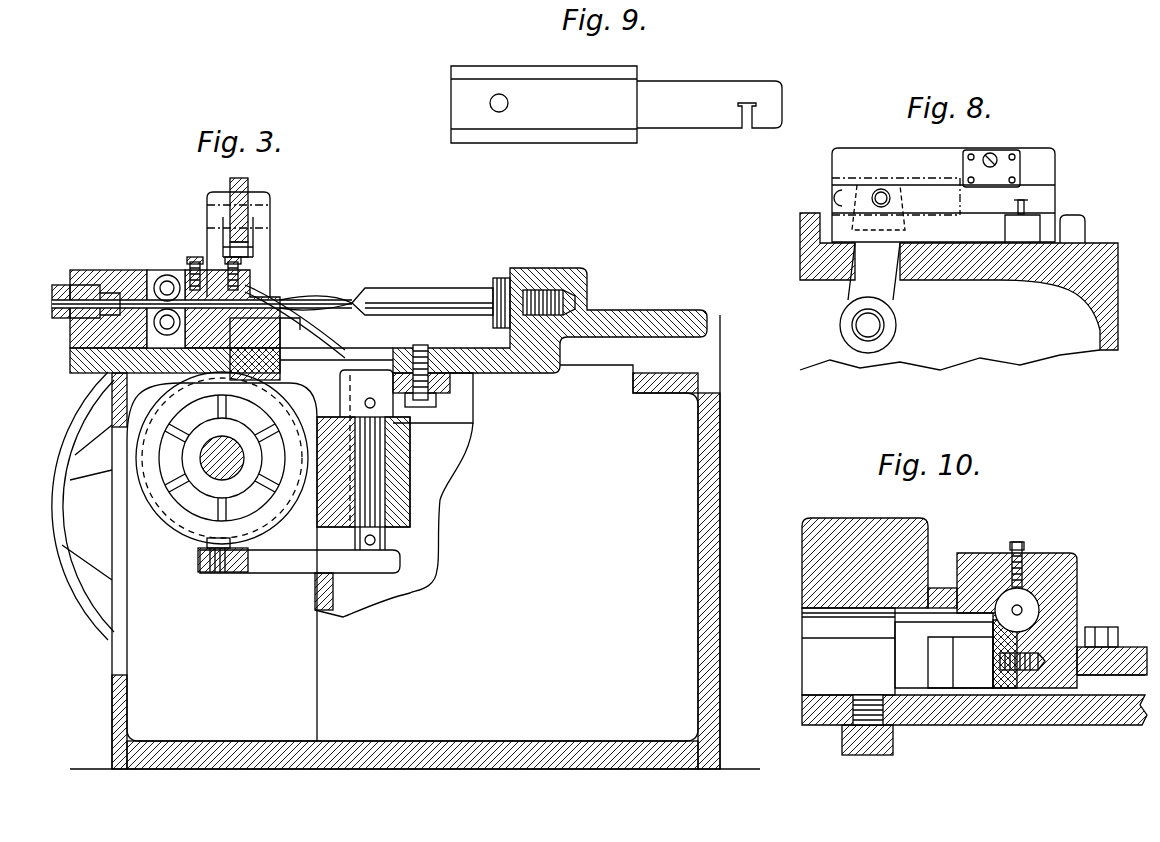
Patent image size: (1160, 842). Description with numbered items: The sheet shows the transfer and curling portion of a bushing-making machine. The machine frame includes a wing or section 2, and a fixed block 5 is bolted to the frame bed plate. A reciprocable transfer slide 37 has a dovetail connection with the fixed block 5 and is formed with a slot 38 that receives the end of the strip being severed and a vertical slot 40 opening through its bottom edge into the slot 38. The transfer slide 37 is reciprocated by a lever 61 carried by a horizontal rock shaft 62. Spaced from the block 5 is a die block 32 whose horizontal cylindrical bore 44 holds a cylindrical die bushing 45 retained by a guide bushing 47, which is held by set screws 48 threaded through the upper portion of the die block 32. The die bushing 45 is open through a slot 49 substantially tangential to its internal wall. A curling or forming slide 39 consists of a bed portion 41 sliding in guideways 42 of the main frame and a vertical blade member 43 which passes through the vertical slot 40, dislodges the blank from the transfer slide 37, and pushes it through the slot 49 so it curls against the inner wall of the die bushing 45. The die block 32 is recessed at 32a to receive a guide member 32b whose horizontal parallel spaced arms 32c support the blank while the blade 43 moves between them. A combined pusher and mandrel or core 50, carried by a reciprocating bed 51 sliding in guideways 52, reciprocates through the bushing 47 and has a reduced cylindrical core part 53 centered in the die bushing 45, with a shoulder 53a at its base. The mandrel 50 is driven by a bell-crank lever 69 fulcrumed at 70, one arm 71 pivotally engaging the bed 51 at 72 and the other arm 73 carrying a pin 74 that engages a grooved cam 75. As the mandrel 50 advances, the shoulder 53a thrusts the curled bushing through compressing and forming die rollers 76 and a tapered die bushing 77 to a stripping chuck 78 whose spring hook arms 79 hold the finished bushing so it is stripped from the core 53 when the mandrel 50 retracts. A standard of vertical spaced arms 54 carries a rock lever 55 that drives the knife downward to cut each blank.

In FIG. 3, the wing or section of the machine frame 2 is at (712, 488).
In FIG. 8, the fixed block 5 is at (952, 156).
In FIG. 3, the die block 32 is at (80, 275).
In FIG. 10, the die block 32 is at (1078, 588).
In FIG. 10, the recess in the die block 32a is at (962, 610).
In FIG. 10, the guide member 32b is at (995, 690).
In FIG. 10, the horizontal parallel spaced arms 32c is at (940, 652).
In FIG. 9, the transfer slide 37 is at (600, 130).
In FIG. 8, the transfer slide 37 is at (915, 196).
In FIG. 10, the transfer slide 37 is at (937, 586).
In FIG. 9, the slot 38 is at (746, 104).
In FIG. 8, the slot 38 is at (1022, 200).
In FIG. 10, the slot 38 is at (900, 620).
In FIG. 8, the curling or forming slide 39 is at (1056, 224).
In FIG. 10, the curling or forming slide 39 is at (810, 672).
In FIG. 9, the vertical slot 40 is at (757, 118).
In FIG. 10, the vertical slot 40 is at (925, 632).
In FIG. 3, the bed portion 41 is at (222, 380).
In FIG. 10, the bed portion 41 is at (1042, 722).
In FIG. 3, the guideways 42 is at (332, 328).
In FIG. 8, the guideways 42 is at (972, 282).
In FIG. 8, the vertical blade member 43 is at (1028, 228).
In FIG. 10, the vertical blade member 43 is at (805, 630).
In FIG. 3, the horizontal cylindrical bore 44 is at (192, 260).
In FIG. 10, the horizontal cylindrical bore 44 is at (1032, 612).
In FIG. 10, the cylindrical die bushing 45 is at (1040, 580).
In FIG. 3, the guide bushing 47 is at (252, 302).
In FIG. 3, the set screws 48 is at (192, 256).
In FIG. 10, the set screws 48 is at (1018, 540).
In FIG. 10, the slot 49 is at (995, 642).
In FIG. 3, the combined pusher and mandrel or core 50 is at (416, 292).
In FIG. 3, the reciprocating bed 51 is at (575, 366).
In FIG. 3, the guideways 52 is at (710, 322).
In FIG. 3, the reduced cylindrical core part 53 is at (262, 287).
In FIG. 10, the reduced cylindrical core part 53 is at (1032, 590).
In FIG. 3, the shoulder 53a is at (318, 300).
In FIG. 3, the vertical spaced arms 54 is at (256, 194).
In FIG. 3, the rock lever 55 is at (236, 188).
In FIG. 8, the lever 61 is at (852, 288).
In FIG. 8, the horizontal rock shaft 62 is at (866, 330).
In FIG. 3, the bell-crank lever 69 is at (400, 415).
In FIG. 3, the fulcrum 70 is at (430, 505).
In FIG. 3, the arm of the bell-crank lever 71 is at (468, 386).
In FIG. 8, the arm of the bell-crank lever 71 is at (1015, 270).
In FIG. 3, the pivot 72 is at (445, 408).
In FIG. 3, the other arm of the bell-crank lever 73 is at (285, 574).
In FIG. 3, the pin 74 is at (222, 576).
In FIG. 3, the grooved cam 75 is at (185, 530).
In FIG. 3, the compressing and forming die rollers 76 is at (163, 280).
In FIG. 3, the tapered die bushing 77 is at (122, 290).
In FIG. 3, the stripping chuck 78 is at (60, 305).
In FIG. 3, the spring hook arms 79 is at (105, 288).